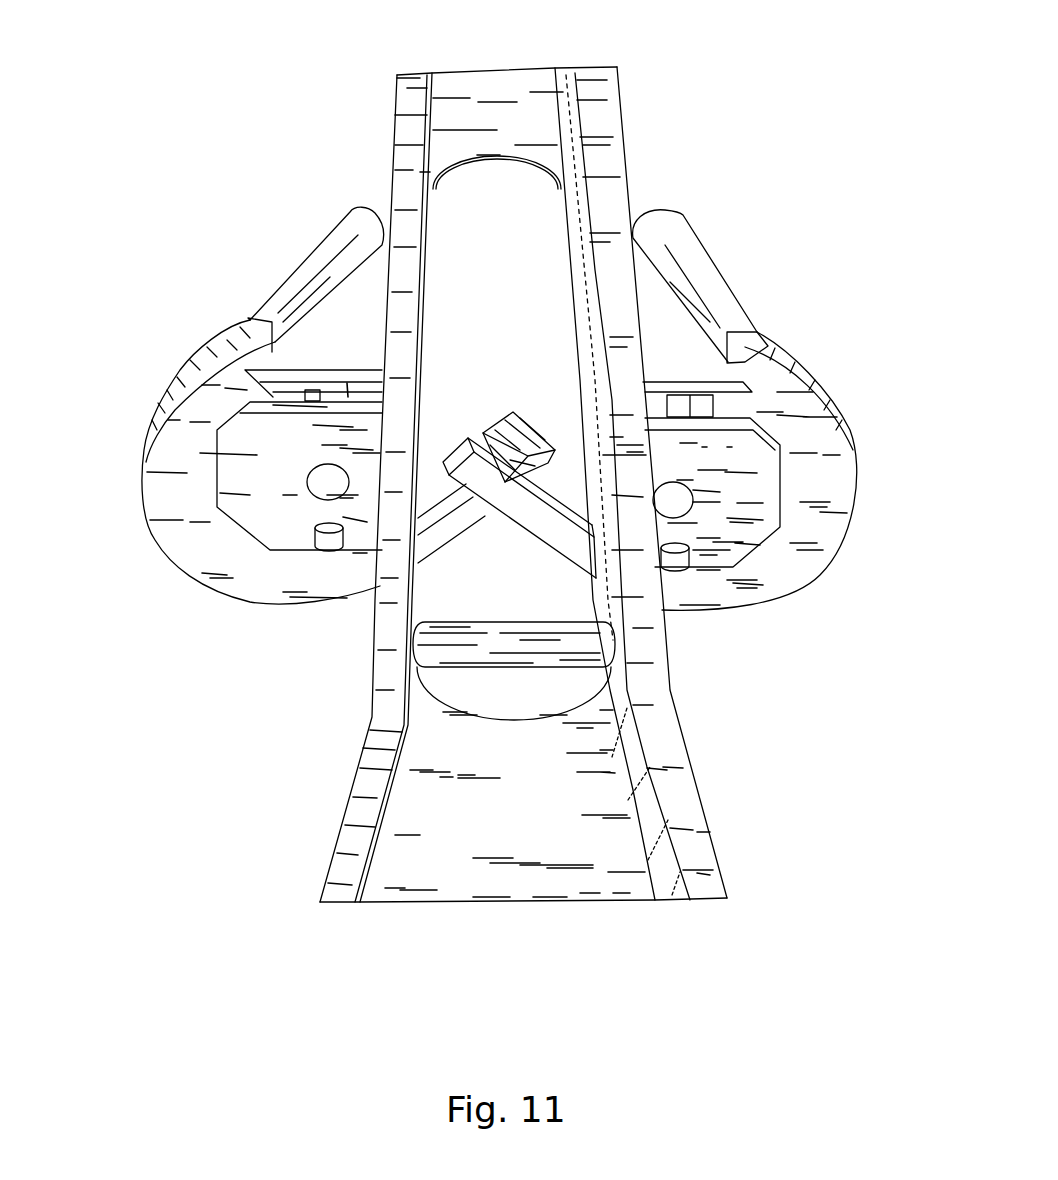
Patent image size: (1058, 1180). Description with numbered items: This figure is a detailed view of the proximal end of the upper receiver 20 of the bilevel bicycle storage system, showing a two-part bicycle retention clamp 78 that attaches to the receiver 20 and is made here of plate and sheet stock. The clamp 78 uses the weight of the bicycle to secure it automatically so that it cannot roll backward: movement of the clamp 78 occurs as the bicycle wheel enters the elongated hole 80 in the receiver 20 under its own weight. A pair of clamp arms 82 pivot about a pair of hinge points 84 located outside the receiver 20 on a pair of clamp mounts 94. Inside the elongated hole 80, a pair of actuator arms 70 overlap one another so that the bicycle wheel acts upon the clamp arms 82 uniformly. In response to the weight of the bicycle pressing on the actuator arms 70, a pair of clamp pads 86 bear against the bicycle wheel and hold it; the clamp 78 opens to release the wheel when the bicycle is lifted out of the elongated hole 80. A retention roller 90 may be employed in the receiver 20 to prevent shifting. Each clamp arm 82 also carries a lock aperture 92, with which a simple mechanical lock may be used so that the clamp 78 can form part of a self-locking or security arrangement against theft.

The receiver 20 is at (593, 120).
The actuator arms 70 is at (453, 520).
The bicycle retention clamp 78 is at (797, 290).
The elongated hole 80 is at (543, 253).
The clamp arms 82 is at (140, 455).
The hinge points 84 is at (303, 485).
The clamp pads 86 is at (307, 270).
The retention roller 90 is at (583, 647).
The lock apertures 92 is at (332, 547).
The clamp mounts 94 is at (240, 507).